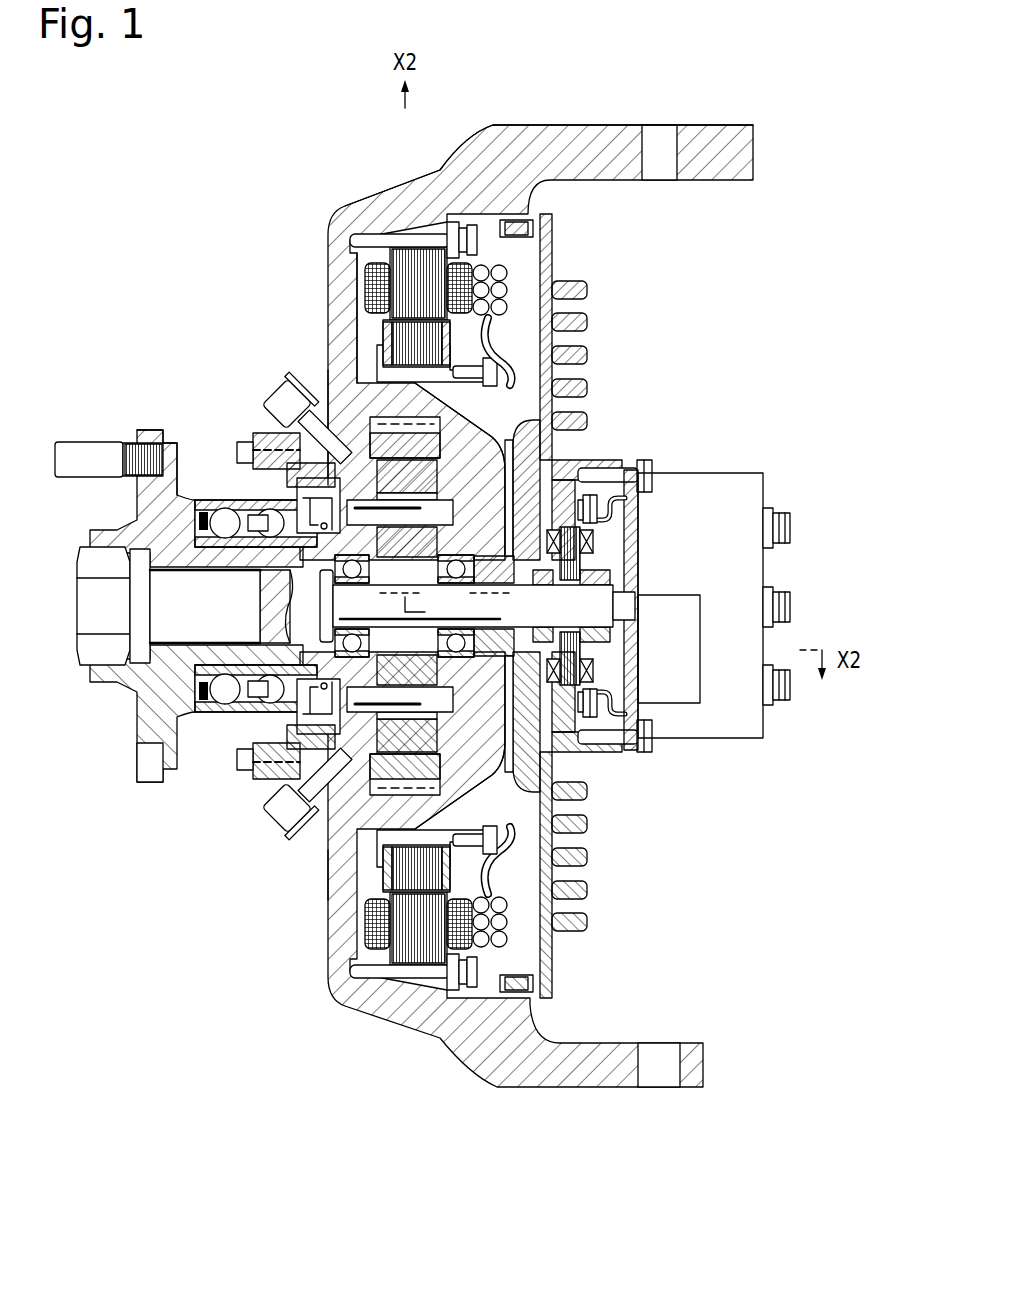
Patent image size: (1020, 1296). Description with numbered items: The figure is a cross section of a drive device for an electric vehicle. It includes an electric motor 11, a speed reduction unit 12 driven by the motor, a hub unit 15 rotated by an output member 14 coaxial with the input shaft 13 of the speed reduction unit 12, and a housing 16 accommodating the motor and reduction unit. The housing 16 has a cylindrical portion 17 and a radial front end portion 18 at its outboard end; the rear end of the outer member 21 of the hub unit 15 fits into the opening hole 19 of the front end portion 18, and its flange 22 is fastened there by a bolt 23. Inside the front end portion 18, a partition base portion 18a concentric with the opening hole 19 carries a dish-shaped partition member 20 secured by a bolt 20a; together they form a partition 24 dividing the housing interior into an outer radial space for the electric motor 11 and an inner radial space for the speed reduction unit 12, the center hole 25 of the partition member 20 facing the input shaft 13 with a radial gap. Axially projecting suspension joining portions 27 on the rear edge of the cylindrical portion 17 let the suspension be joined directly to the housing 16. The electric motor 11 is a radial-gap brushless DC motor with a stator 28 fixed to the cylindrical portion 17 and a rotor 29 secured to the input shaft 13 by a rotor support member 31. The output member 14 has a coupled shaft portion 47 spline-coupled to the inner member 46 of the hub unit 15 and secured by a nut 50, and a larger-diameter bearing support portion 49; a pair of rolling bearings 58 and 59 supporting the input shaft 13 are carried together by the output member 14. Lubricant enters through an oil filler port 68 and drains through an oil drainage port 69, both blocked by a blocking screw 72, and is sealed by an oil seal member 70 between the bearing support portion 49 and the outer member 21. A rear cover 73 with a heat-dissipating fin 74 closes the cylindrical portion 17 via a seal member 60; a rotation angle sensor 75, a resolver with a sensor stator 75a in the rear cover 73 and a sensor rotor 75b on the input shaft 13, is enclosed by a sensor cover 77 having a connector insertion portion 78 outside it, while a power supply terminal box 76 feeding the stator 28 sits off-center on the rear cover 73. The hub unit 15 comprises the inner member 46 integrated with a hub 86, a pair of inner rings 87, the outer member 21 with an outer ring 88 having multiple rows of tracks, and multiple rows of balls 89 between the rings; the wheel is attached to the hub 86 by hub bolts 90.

The electric motor 11 is at (513, 283).
The speed reduction unit 12 is at (522, 415).
The input shaft 13 is at (606, 605).
The output member 14 is at (282, 823).
The hub unit 15 is at (112, 519).
The housing 16 is at (578, 125).
The cylindrical portion 17 is at (493, 183).
The front end portion 18 is at (327, 215).
The partition base portion 18a is at (347, 385).
The opening hole 19 is at (317, 490).
The partition member 20 is at (502, 451).
The bolt 20a is at (420, 812).
The outer member 21 is at (220, 528).
The flange 22 is at (253, 442).
The bolt 23 is at (240, 462).
The partition 24 is at (452, 455).
The center hole 25 is at (592, 548).
The suspension joining portion 27 is at (745, 150).
The stator 28 is at (437, 265).
The rotor 29 is at (435, 340).
The rotor support member 31 is at (520, 380).
The inner member 46 is at (232, 670).
The coupled shaft portion 47 is at (165, 628).
The bearing support portion 49 is at (247, 758).
The nut 50 is at (103, 618).
The rolling bearing 58 is at (340, 962).
The rolling bearing 59 is at (473, 840).
The seal member 60 is at (530, 229).
The oil filler port 68 is at (350, 395).
The oil drainage port 69 is at (330, 875).
The oil seal member 70 is at (257, 745).
The blocking screw 72 is at (287, 397).
The rear cover 73 is at (546, 948).
The fin 74 is at (575, 892).
The rotation angle sensor 75 is at (597, 640).
The sensor stator 75a is at (572, 730).
The sensor rotor 75b is at (593, 622).
The power supply terminal box 76 is at (712, 490).
The sensor cover 77 is at (636, 680).
The connector insertion portion 78 is at (685, 673).
The hub 86 is at (148, 491).
The inner rings 87 is at (190, 682).
The outer ring 88 is at (203, 512).
The balls 89 is at (222, 538).
The hub bolts 90 is at (82, 450).